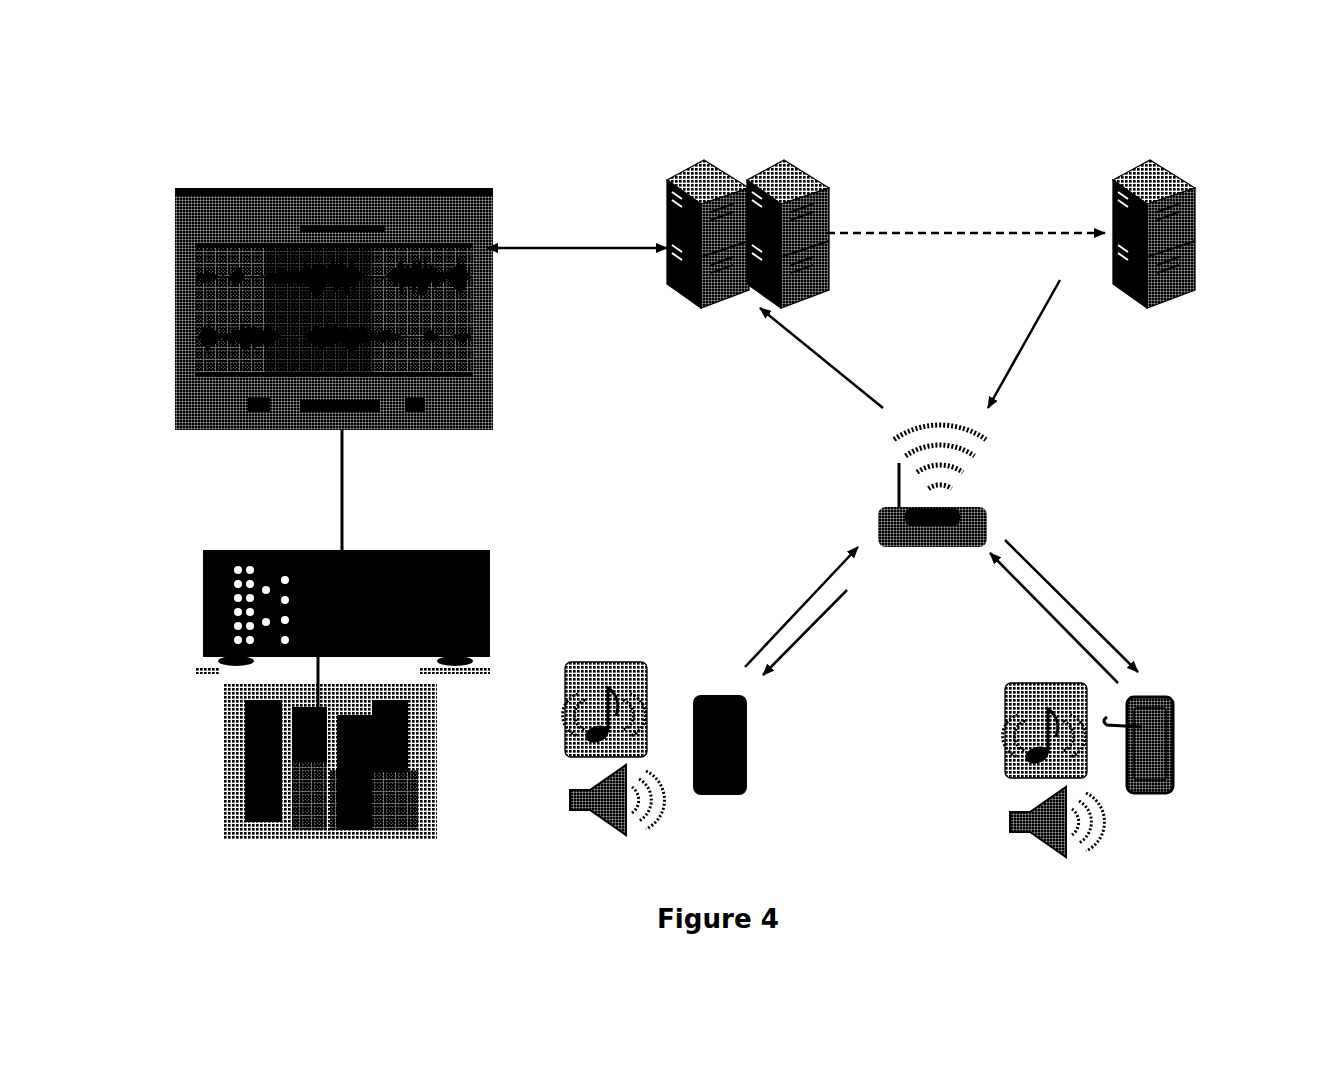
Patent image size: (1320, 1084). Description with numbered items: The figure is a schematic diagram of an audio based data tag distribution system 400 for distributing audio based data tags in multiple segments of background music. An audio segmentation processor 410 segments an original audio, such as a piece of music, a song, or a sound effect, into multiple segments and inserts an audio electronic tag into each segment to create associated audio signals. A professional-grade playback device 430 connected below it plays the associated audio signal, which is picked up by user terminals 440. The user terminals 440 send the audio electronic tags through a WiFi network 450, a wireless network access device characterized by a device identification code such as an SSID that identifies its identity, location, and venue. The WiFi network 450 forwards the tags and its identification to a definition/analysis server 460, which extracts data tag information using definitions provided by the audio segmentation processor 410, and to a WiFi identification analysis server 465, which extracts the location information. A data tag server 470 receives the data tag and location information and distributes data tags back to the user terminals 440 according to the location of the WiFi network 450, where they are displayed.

The audio based data tag distribution system 400 is at (1083, 130).
The audio segmentation processor 410 is at (383, 200).
The playback device 430 is at (212, 605).
The user terminals 440 is at (737, 756).
The WiFi network 450 is at (965, 518).
The definition/analysis server 460 is at (718, 179).
The WiFi identification analysis server 465 is at (798, 177).
The data tag server 470 is at (1191, 220).